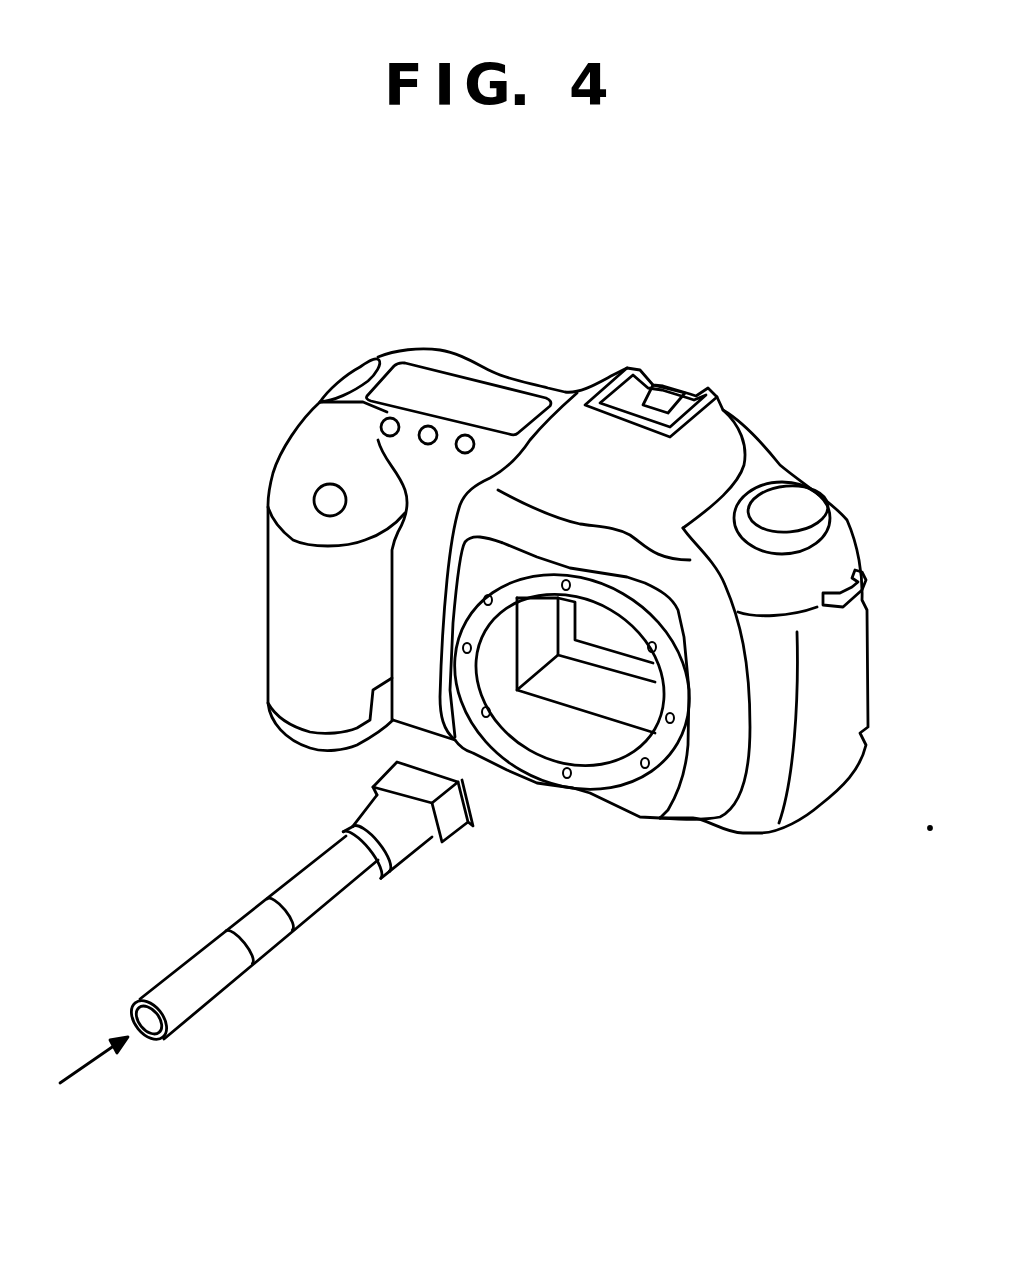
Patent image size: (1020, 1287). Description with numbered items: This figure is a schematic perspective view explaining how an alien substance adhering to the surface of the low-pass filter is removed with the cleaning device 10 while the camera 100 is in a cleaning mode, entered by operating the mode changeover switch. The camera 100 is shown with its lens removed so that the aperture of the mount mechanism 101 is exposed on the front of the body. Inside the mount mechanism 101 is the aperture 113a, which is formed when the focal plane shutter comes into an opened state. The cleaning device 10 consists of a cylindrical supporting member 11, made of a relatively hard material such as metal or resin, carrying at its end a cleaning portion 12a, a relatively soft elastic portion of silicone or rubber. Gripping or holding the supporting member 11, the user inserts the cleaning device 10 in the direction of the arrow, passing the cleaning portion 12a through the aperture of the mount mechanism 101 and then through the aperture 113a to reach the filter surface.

The camera 100 is at (757, 448).
The mount mechanism 101 is at (525, 753).
The aperture 113a is at (590, 677).
The cleaning device 10 is at (304, 913).
The supporting member 11 is at (182, 980).
The cleaning portion 12a is at (468, 822).